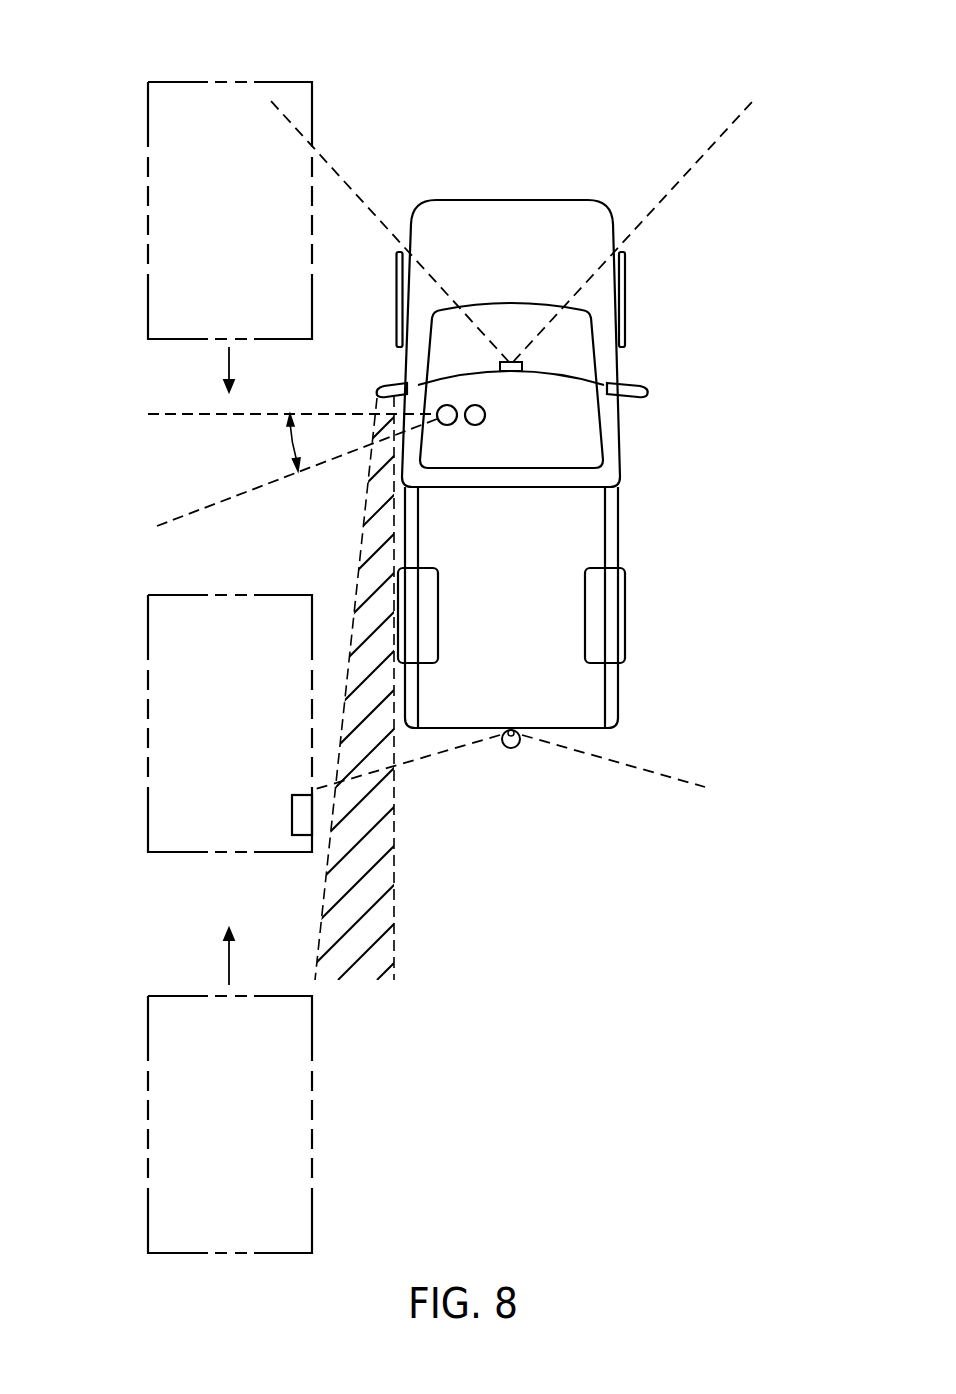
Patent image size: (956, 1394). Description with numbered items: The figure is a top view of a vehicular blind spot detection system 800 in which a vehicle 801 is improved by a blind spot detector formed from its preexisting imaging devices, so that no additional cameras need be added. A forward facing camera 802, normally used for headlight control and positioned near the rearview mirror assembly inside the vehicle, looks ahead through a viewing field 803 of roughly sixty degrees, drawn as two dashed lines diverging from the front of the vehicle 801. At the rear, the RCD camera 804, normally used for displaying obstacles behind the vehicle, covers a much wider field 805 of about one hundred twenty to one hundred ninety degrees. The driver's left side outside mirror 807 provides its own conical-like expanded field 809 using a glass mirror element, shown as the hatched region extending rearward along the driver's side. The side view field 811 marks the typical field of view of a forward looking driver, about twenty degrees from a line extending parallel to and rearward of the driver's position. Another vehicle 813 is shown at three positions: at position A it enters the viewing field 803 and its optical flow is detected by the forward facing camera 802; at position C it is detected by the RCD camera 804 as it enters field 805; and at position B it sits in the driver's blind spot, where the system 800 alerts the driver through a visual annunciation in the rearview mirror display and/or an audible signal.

The vehicular blind spot detection system 800 is at (716, 43).
The vehicle 801 is at (588, 427).
The forward facing camera 802 is at (524, 362).
The viewing field 803 is at (652, 144).
The RCD camera 804 is at (510, 748).
The field 805 is at (499, 829).
The side mirror 807 is at (392, 385).
The field 809 is at (367, 928).
The side view field 811 is at (158, 440).
The vehicle 813 is at (148, 118).